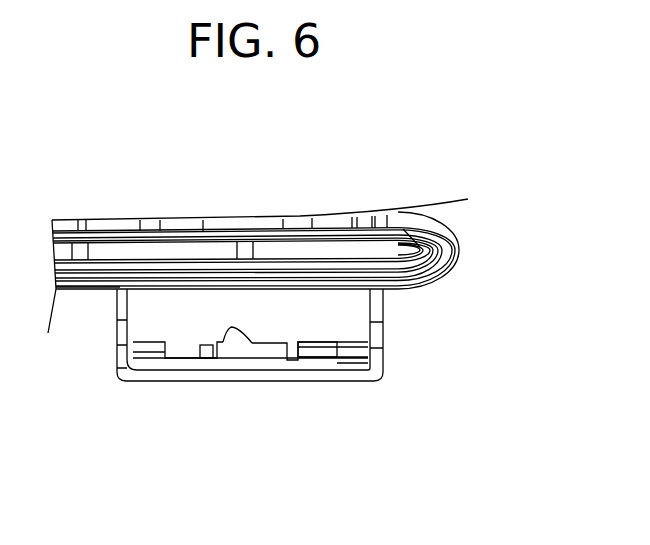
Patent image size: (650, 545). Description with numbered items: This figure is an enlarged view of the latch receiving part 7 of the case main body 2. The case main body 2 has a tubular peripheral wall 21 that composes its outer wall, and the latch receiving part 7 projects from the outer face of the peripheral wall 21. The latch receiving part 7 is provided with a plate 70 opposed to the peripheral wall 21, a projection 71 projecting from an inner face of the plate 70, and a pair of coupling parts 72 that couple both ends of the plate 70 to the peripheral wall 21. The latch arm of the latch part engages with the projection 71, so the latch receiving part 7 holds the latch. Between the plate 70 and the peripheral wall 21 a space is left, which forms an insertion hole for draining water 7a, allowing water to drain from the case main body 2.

The case main body 2 is at (463, 289).
The peripheral wall 21 is at (76, 292).
The latch receiving part 7 is at (282, 308).
The insertion hole for draining water 7a is at (273, 315).
The plate 70 is at (247, 378).
The projection 71 is at (222, 345).
The coupling part 72 is at (120, 334).